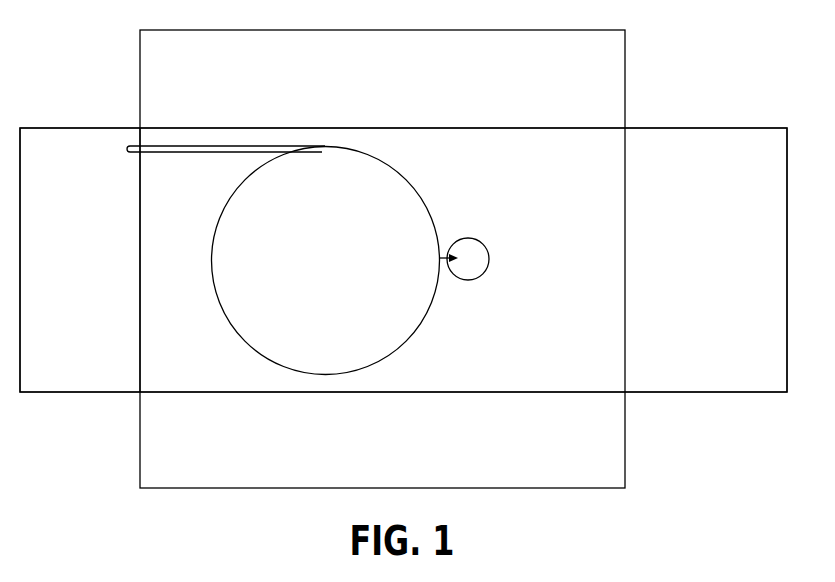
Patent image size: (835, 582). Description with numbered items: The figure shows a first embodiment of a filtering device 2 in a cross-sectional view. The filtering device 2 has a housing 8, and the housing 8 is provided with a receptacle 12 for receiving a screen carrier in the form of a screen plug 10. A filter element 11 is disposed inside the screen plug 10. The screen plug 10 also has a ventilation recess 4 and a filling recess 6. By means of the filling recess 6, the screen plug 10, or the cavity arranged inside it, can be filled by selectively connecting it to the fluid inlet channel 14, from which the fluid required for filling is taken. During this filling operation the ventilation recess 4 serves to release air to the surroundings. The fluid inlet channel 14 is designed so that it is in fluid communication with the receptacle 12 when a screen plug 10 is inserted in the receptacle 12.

The filtering device 2 is at (676, 80).
The ventilation recess 4 is at (210, 146).
The filling recess 6 is at (447, 252).
The housing 8 is at (165, 437).
The screen plug 10 is at (738, 375).
The filter element 11 is at (275, 336).
The receptacle 12 is at (133, 121).
The fluid inlet channel 14 is at (477, 265).